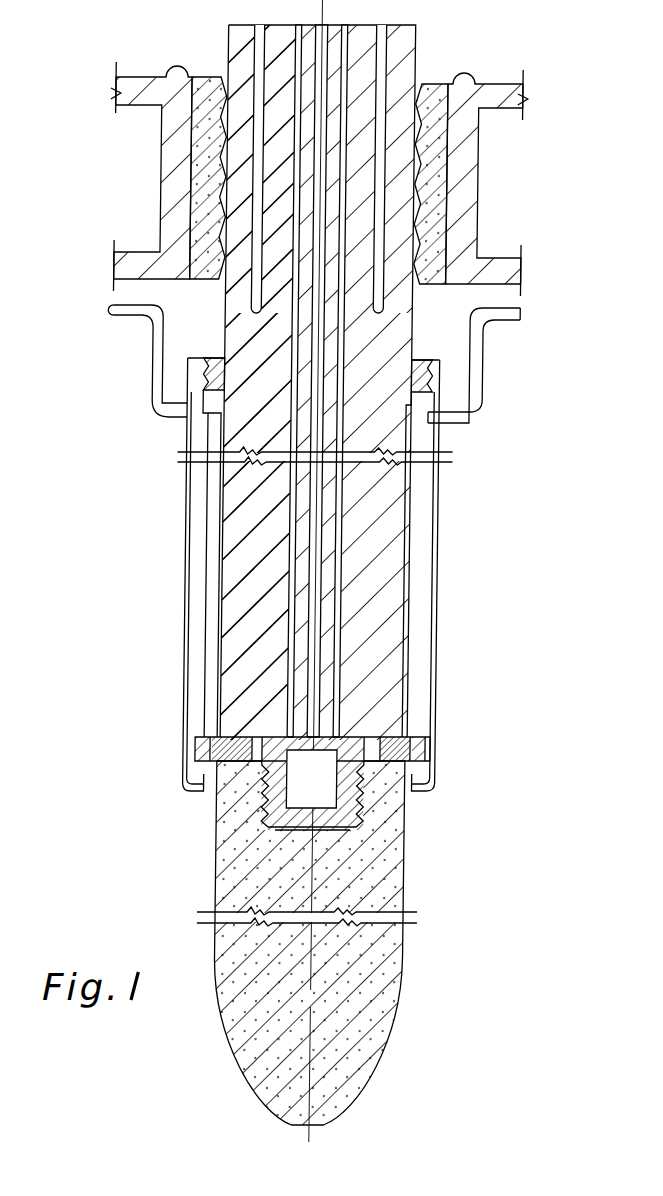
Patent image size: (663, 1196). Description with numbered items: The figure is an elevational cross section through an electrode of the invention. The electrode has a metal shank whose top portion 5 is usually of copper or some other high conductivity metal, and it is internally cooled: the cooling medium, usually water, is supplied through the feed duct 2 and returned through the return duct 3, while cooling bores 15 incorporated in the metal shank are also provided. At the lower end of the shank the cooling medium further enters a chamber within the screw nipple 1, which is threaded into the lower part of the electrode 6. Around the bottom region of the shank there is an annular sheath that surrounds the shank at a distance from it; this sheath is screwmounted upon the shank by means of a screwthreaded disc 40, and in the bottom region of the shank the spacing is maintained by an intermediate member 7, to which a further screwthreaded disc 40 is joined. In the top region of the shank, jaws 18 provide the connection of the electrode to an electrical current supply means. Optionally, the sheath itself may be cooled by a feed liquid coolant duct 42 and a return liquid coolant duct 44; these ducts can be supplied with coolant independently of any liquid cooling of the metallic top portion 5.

The screw nipple 1 is at (347, 820).
The feed duct 2 is at (296, 612).
The return duct 3 is at (323, 510).
The top portion 5 is at (400, 37).
The nose member 6 is at (390, 978).
The intermediate member 7 is at (271, 763).
The cooling bores 15 is at (253, 306).
The jaws 18 is at (216, 78).
The screwthreaded disc 40 is at (426, 362).
The feed liquid coolant duct 42 is at (143, 318).
The return liquid coolant duct 44 is at (522, 318).